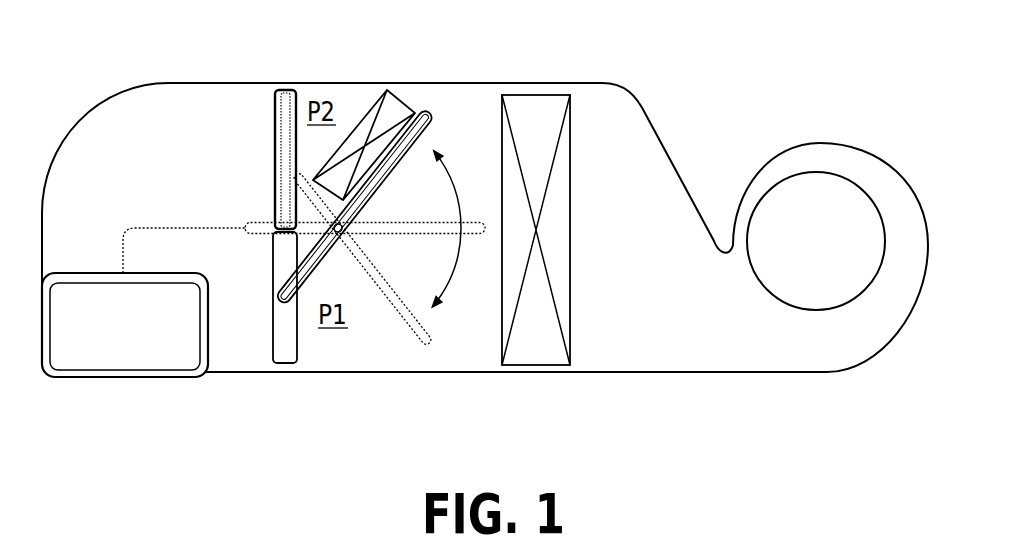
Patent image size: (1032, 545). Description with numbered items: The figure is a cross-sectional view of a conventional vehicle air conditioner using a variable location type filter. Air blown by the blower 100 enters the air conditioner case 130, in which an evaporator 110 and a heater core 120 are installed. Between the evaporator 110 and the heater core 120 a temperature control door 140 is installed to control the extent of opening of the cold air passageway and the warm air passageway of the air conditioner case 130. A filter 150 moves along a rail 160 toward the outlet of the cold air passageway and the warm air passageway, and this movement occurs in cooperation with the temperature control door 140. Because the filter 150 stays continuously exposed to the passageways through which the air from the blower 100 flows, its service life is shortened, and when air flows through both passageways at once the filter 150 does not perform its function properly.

The blower 100 is at (811, 200).
The evaporator 110 is at (533, 103).
The heater core 120 is at (387, 88).
The air conditioner case 130 is at (580, 86).
The temperature control door 140 is at (433, 112).
The filter 150 is at (292, 342).
The rail 160 is at (275, 106).